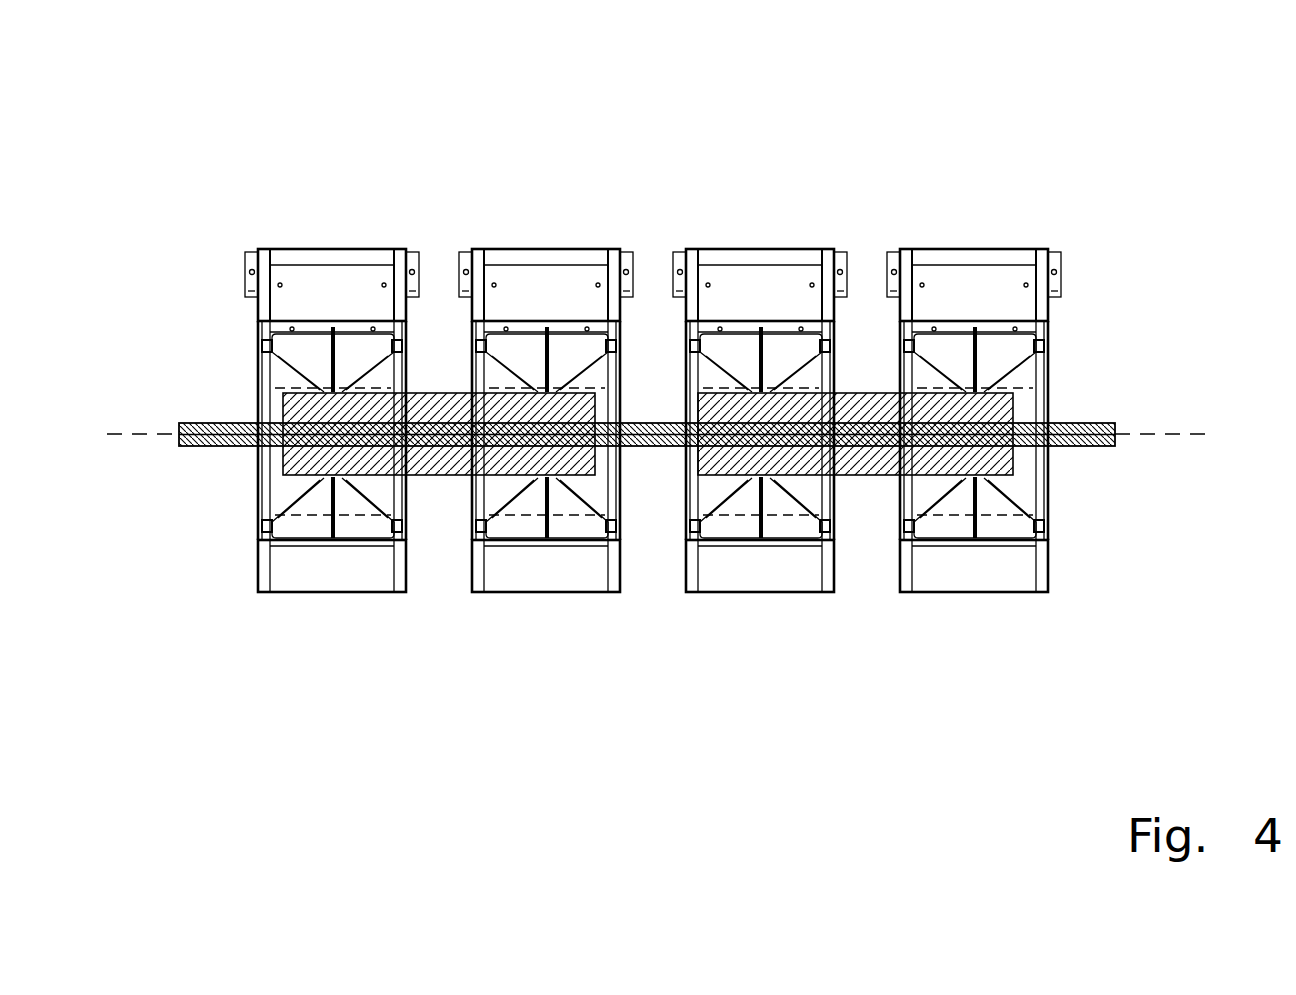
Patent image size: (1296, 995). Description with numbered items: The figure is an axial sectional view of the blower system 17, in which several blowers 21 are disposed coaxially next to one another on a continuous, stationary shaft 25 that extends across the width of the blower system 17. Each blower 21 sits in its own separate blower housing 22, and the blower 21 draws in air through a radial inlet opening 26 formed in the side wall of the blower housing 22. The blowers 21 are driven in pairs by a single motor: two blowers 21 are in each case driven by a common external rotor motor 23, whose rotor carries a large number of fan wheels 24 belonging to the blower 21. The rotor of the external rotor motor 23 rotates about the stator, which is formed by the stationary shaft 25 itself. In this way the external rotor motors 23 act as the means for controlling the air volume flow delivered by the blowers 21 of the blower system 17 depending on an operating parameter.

The blower system 17 is at (475, 145).
The blower 21 is at (340, 220).
The blower housing 22 is at (258, 565).
The external rotor motor 23 is at (442, 390).
The fan wheel 24 is at (353, 353).
The stationary shaft 25 is at (215, 423).
The radial inlet opening 26 is at (258, 362).